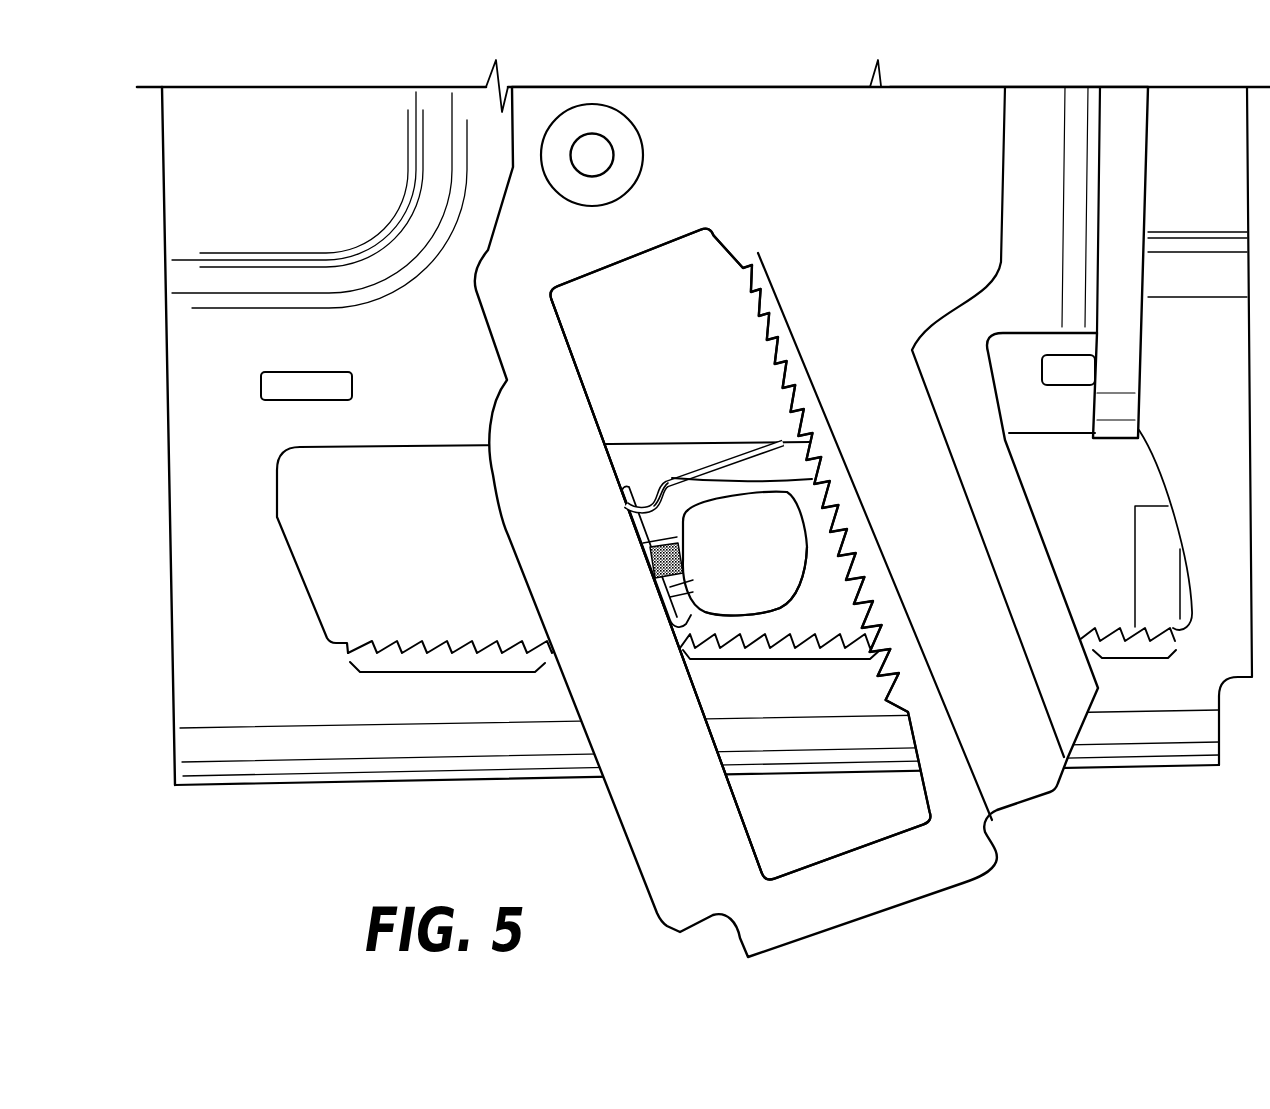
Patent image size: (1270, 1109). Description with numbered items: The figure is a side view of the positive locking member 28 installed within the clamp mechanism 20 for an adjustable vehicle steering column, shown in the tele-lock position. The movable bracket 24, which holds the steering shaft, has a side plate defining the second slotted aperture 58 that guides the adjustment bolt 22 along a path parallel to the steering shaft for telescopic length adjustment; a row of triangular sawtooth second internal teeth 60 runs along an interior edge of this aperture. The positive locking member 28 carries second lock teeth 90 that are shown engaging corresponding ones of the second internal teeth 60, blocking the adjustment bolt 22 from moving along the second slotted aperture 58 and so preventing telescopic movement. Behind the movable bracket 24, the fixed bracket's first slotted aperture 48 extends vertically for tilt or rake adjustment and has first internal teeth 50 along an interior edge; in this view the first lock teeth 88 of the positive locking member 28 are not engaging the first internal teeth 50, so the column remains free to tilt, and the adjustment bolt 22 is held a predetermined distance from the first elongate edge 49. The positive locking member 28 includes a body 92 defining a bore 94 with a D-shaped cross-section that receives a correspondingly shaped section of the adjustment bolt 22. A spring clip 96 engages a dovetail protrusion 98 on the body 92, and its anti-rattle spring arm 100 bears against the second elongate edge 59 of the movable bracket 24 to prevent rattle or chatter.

The clamp mechanism 20 is at (128, 102).
The adjustment bolt 22 is at (792, 116).
The movable bracket 24 is at (196, 352).
The positive locking member 28 is at (739, 480).
The first slotted aperture 48 is at (690, 273).
The first elongate edge 49 is at (568, 367).
The first internal teeth 50 is at (862, 497).
The second slotted aperture 58 is at (310, 497).
The second elongate edge 59 is at (345, 452).
The second internal teeth 60 is at (447, 677).
The first lock teeth 88 is at (805, 515).
The second lock teeth 90 is at (762, 618).
The bore 94 is at (797, 592).
The body 92 is at (680, 494).
The spring clip 96 is at (621, 484).
The dovetail protrusion 98 is at (649, 520).
The anti-rattle spring arm 100 is at (707, 462).